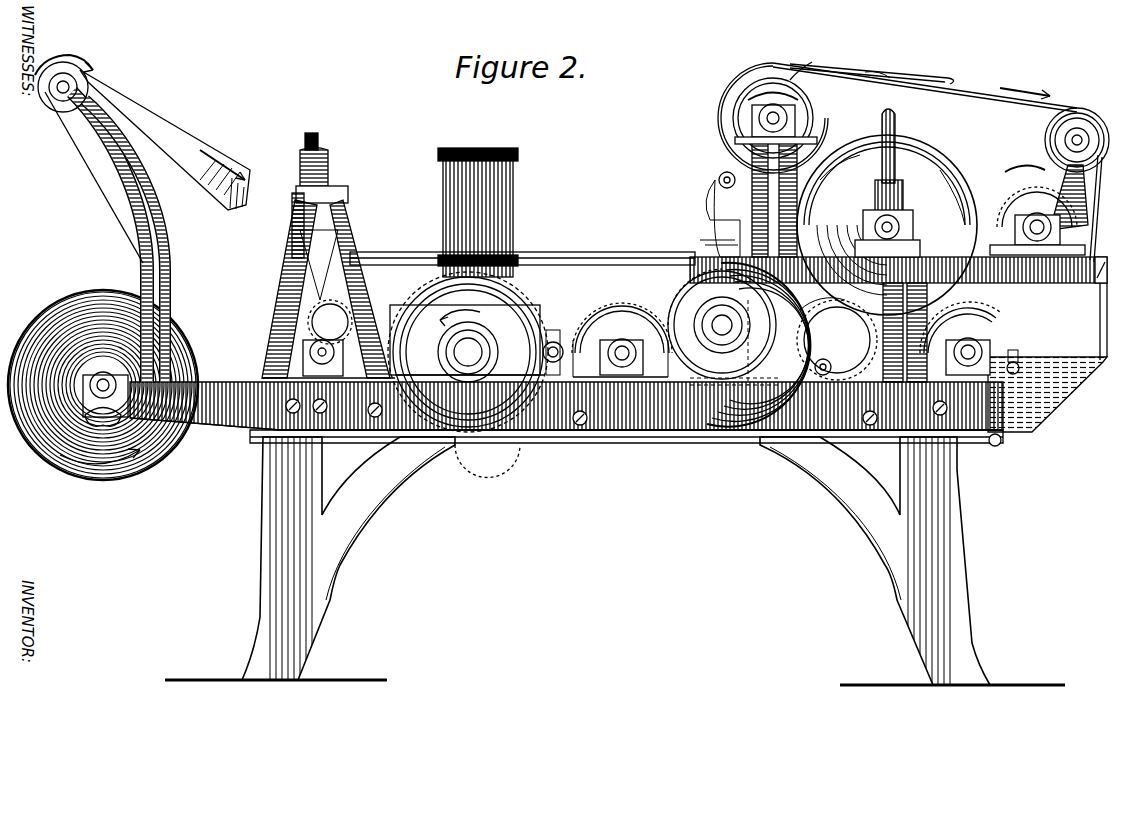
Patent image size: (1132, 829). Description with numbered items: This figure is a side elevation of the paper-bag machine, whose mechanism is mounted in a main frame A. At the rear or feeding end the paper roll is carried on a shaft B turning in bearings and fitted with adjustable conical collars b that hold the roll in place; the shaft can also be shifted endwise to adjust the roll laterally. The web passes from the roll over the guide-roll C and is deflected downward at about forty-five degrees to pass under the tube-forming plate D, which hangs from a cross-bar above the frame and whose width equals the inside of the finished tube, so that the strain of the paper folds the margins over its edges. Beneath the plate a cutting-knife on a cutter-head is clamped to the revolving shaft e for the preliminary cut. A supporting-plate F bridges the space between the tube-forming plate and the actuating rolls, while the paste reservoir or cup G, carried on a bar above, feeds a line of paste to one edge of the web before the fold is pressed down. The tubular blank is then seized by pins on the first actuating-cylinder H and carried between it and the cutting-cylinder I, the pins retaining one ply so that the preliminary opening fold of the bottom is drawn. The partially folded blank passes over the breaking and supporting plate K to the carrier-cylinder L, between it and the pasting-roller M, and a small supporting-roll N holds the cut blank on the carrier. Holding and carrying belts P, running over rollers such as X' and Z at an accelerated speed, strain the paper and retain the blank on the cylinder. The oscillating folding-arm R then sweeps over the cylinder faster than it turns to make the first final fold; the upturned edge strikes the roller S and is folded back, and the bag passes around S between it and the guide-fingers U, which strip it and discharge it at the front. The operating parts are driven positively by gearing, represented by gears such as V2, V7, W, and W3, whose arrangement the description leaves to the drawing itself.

The main frame A is at (618, 349).
The paper-roll shaft B is at (30, 355).
The adjustable conical collars b is at (48, 332).
The guide-roll C is at (80, 72).
The tube-forming plate D is at (290, 152).
The revolving shaft e is at (318, 352).
The supporting-plate F is at (550, 342).
The paste reservoir or cup G is at (480, 296).
The first actuating-cylinder H is at (560, 290).
The cutting-cylinder I is at (722, 324).
The breaking and supporting plate K is at (712, 440).
The carrier-cylinder L is at (887, 210).
The pasting-roller M is at (1020, 340).
The small supporting-roll N is at (995, 305).
The holding and carrying belt P is at (972, 96).
The oscillating folding-arm R is at (896, 118).
The roller S is at (801, 61).
The guide-fingers U is at (876, 66).
The gear V2 is at (491, 461).
The gear V7 is at (1022, 205).
The gear W is at (837, 351).
The lever W3 is at (738, 215).
The roller X' is at (781, 118).
The roller Z is at (1108, 136).